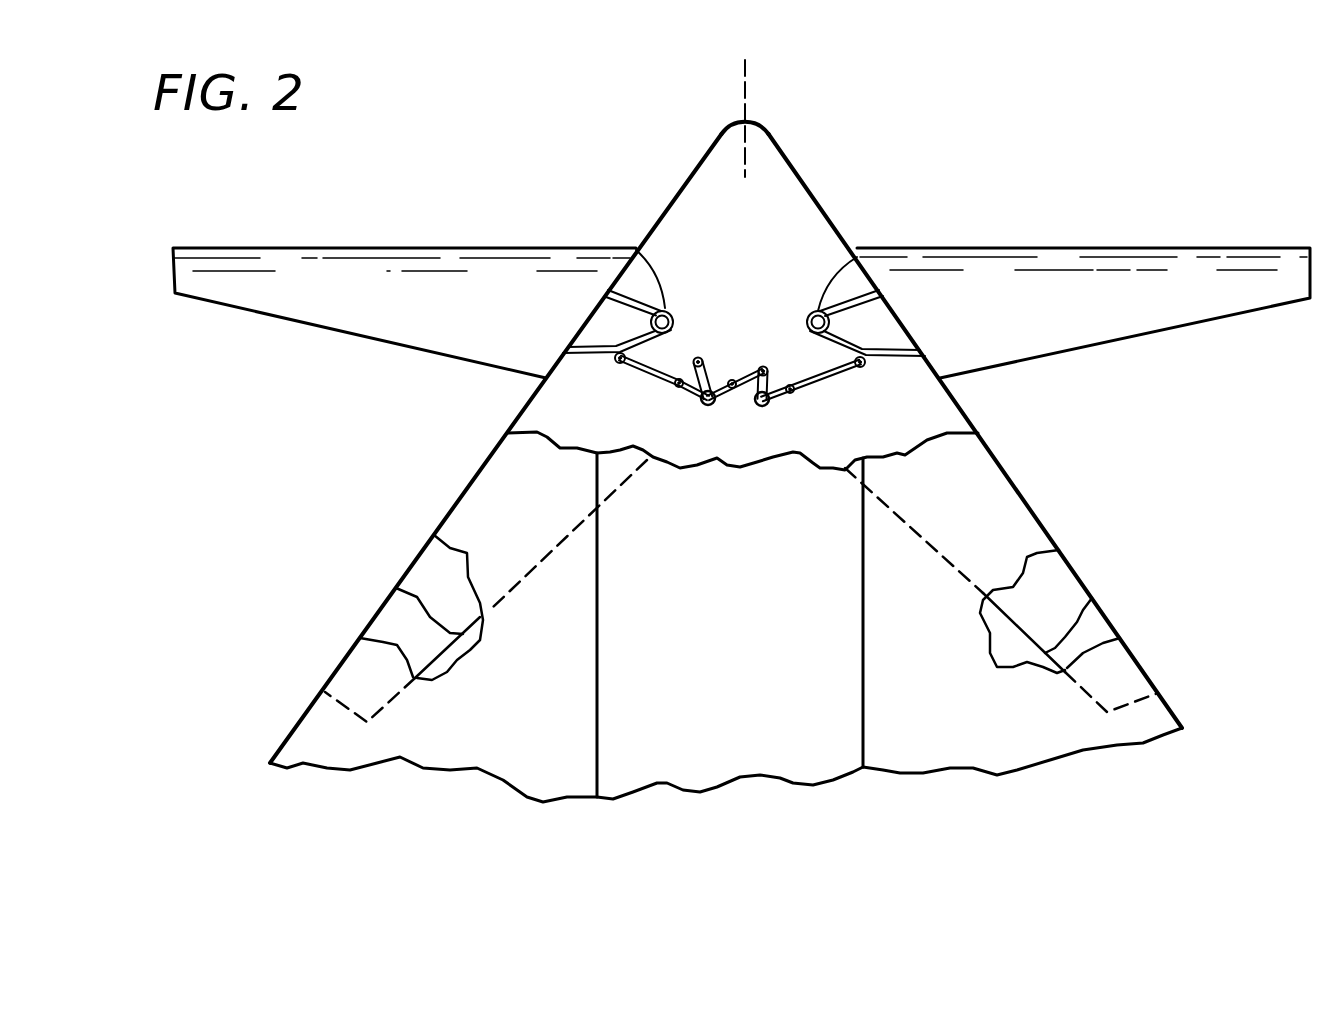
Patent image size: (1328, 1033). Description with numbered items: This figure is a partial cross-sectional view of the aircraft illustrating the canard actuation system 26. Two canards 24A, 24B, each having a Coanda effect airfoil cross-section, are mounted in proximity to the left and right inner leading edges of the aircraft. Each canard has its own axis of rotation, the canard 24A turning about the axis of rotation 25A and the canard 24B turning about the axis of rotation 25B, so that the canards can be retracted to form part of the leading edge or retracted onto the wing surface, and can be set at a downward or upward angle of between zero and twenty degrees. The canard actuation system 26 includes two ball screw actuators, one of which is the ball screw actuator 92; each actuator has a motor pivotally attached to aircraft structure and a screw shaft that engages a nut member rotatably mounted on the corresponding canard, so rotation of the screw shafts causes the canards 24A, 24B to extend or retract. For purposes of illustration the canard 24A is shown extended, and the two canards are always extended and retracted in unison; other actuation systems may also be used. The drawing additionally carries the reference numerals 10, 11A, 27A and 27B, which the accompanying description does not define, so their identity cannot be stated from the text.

The aircraft 10 is at (1150, 163).
The longitudinal centerline axis 11A is at (742, 100).
The ball screw actuator 92 is at (760, 124).
The canard 24A is at (463, 248).
The canard 24B is at (1017, 245).
The axis of rotation 25A is at (634, 250).
The axis of rotation 25B is at (857, 256).
The canard actuation system 26 is at (750, 370).
The left flap 27A is at (396, 588).
The right flap 27B is at (1092, 598).